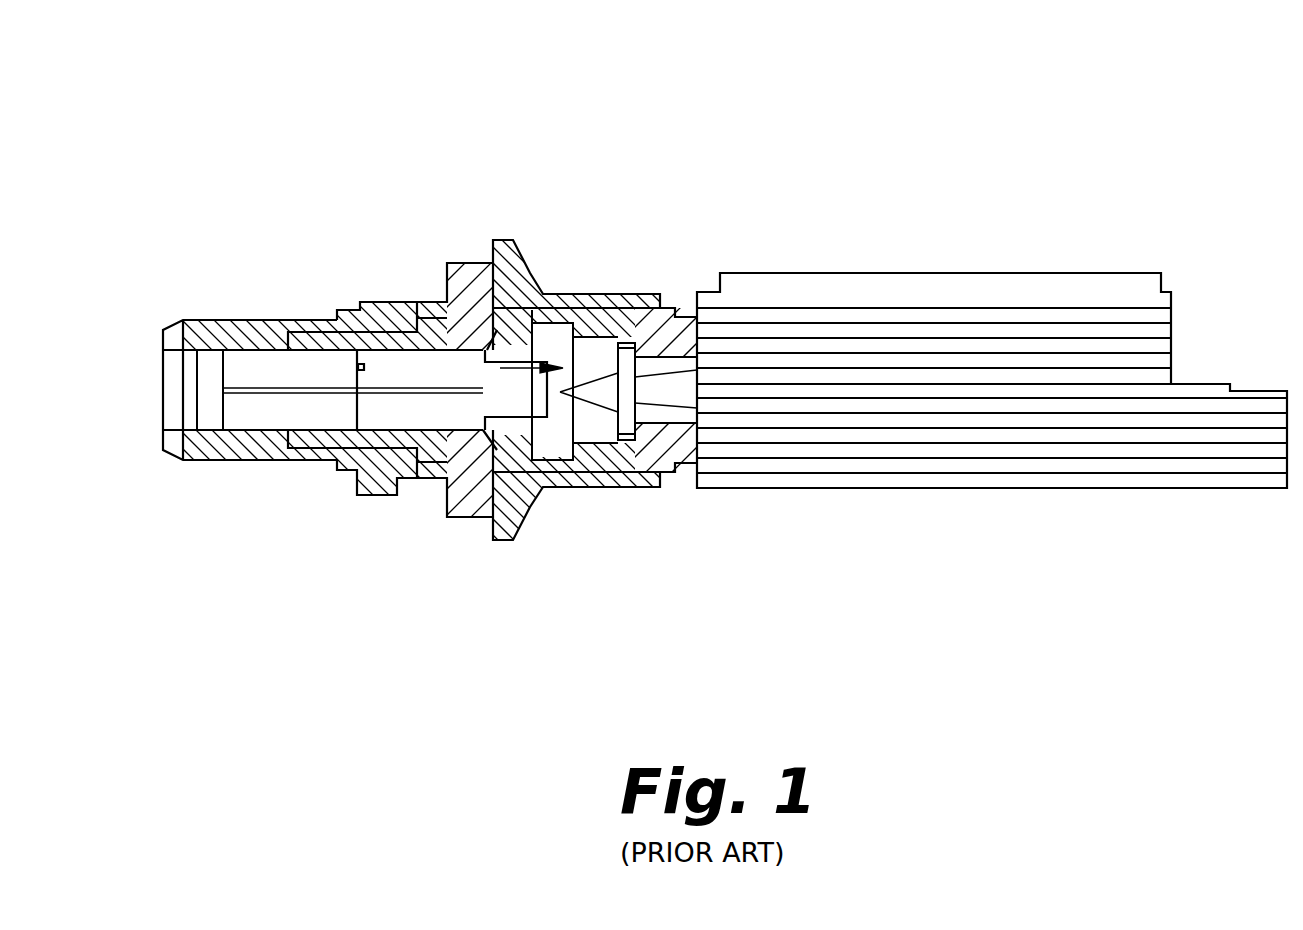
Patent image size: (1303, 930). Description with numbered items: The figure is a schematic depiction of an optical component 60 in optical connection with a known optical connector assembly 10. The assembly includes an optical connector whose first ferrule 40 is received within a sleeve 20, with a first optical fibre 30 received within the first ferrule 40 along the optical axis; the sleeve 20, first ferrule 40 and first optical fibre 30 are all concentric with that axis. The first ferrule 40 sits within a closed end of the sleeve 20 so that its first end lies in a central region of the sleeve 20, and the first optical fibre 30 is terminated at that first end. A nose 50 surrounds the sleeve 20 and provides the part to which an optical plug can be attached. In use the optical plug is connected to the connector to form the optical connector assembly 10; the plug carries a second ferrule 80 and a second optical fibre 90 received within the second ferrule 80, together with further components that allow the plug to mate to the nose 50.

The optical connector assembly 10 is at (234, 116).
The sleeve 20 is at (347, 440).
The first optical fibre 30 is at (384, 378).
The first ferrule 40 is at (436, 412).
The nose 50 is at (190, 333).
The optical component 60 is at (883, 460).
The second ferrule 80 is at (240, 412).
The second optical fibre 90 is at (266, 372).